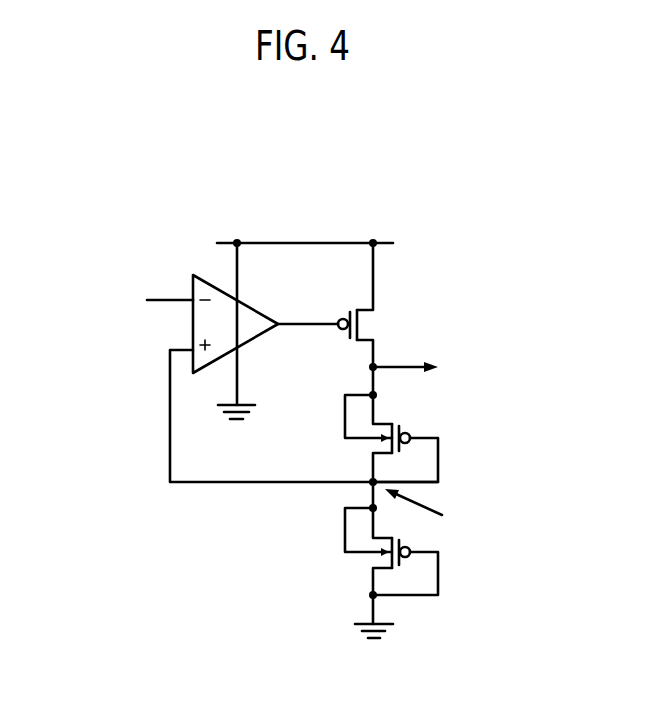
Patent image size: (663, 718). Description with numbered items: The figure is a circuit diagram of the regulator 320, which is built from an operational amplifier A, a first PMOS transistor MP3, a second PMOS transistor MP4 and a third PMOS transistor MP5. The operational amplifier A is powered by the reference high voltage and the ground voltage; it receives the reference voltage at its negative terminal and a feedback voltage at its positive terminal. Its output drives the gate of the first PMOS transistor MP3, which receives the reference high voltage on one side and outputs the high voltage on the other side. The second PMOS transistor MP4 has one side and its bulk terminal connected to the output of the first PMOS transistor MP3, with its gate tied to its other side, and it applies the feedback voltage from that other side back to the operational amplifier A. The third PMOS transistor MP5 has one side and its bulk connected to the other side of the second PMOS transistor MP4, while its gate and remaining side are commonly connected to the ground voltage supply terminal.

The regulator 320 is at (447, 160).
The operational amplifier A is at (258, 312).
The first PMOS transistor MP3 is at (381, 319).
The second PMOS transistor MP4 is at (381, 449).
The third PMOS transistor MP5 is at (381, 564).